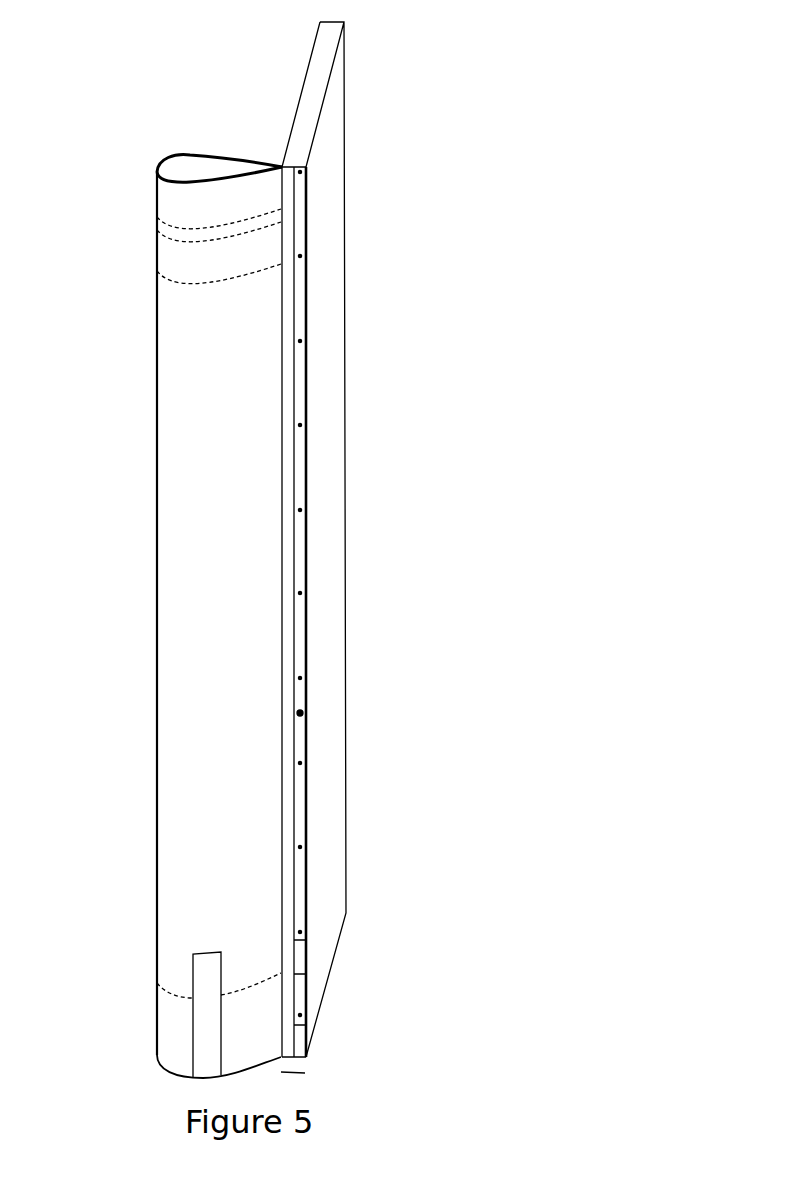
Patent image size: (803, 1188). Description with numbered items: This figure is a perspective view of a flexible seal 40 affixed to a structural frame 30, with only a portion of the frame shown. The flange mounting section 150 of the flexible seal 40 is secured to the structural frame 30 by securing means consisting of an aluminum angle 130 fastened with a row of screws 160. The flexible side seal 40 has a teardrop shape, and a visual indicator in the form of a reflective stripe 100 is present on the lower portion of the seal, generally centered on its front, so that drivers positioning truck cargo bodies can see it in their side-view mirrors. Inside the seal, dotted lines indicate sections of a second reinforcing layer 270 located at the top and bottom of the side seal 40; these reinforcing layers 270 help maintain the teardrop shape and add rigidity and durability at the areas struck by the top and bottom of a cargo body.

The structural frame 30 is at (332, 515).
The flexible seal 40 is at (199, 547).
The reflective stripe 100 is at (203, 1037).
The aluminum angle 130 is at (300, 713).
The flange mounting section 150 is at (302, 1073).
The screws 160 is at (300, 172).
The second reinforcing layer 270 is at (175, 259).